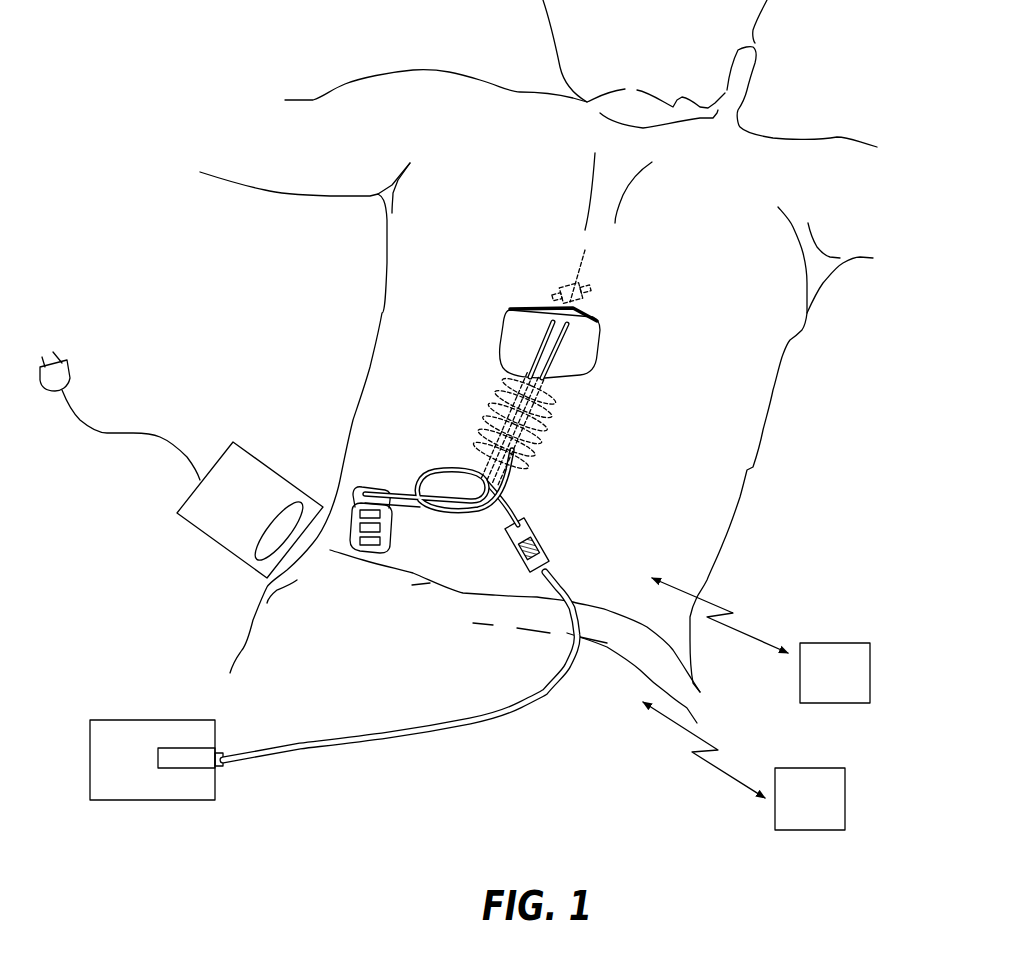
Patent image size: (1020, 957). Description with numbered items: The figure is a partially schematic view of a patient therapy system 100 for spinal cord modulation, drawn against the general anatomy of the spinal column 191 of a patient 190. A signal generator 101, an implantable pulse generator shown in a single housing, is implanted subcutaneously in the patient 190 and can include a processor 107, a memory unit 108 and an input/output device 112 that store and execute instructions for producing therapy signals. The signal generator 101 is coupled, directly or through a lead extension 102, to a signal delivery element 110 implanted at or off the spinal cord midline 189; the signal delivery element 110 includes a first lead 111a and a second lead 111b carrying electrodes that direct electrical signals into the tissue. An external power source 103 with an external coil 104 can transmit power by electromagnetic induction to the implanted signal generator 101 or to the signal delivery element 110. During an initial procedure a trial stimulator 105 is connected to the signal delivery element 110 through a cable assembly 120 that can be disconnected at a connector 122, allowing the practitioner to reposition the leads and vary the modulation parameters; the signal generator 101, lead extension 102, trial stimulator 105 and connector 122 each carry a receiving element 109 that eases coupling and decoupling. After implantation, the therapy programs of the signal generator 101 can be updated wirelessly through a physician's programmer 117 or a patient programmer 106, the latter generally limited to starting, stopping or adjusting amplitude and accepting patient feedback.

The patient therapy system 100 is at (190, 350).
The signal generator 101 is at (390, 517).
The lead extension 102 is at (460, 465).
The external power source 103 is at (247, 443).
The external coil 104 is at (250, 547).
The trial stimulator 105 is at (142, 718).
The patient programmer 106 is at (840, 643).
The processor 107 is at (380, 528).
The memory unit 108 is at (392, 522).
The receiving element 109 is at (177, 748).
The signal delivery element 110 is at (502, 297).
The first lead 111a is at (533, 350).
The second lead 111b is at (563, 350).
The input/output device 112 is at (357, 505).
The physician's programmer 117 is at (814, 768).
The cable assembly 120 is at (473, 743).
The connector 122 is at (545, 540).
The spinal cord midline 189 is at (584, 258).
The patient 190 is at (748, 468).
The spinal column 191 is at (550, 430).